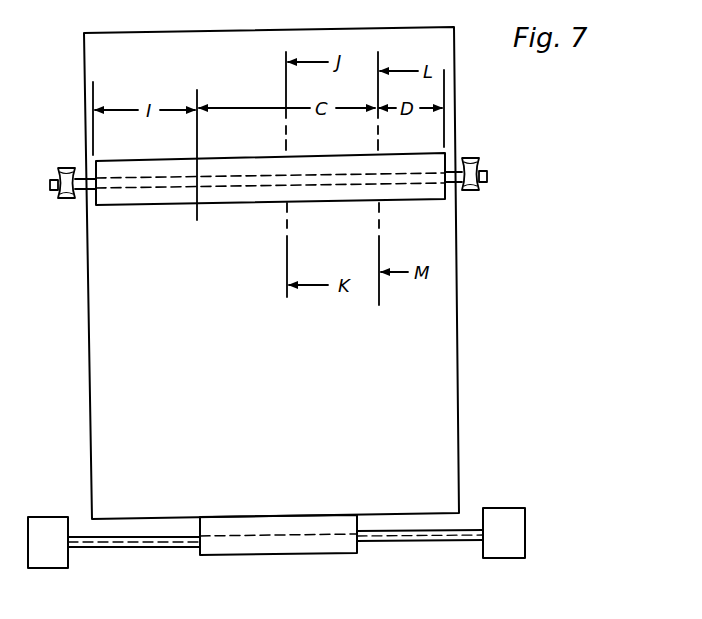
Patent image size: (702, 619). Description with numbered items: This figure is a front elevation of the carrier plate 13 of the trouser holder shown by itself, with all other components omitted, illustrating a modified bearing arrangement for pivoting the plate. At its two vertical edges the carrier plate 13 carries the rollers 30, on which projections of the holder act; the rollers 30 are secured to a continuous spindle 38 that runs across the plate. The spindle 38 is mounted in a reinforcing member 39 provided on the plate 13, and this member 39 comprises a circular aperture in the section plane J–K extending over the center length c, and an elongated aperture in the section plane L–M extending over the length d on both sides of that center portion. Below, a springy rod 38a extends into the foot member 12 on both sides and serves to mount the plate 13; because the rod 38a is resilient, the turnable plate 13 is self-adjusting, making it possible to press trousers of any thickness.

The foot member 12 is at (44, 524).
The carrier plate 13 is at (444, 342).
The rollers 30 is at (66, 167).
The continuous spindle 38 is at (150, 186).
The springy rod 38a is at (414, 537).
The reinforcing member 39 is at (227, 195).